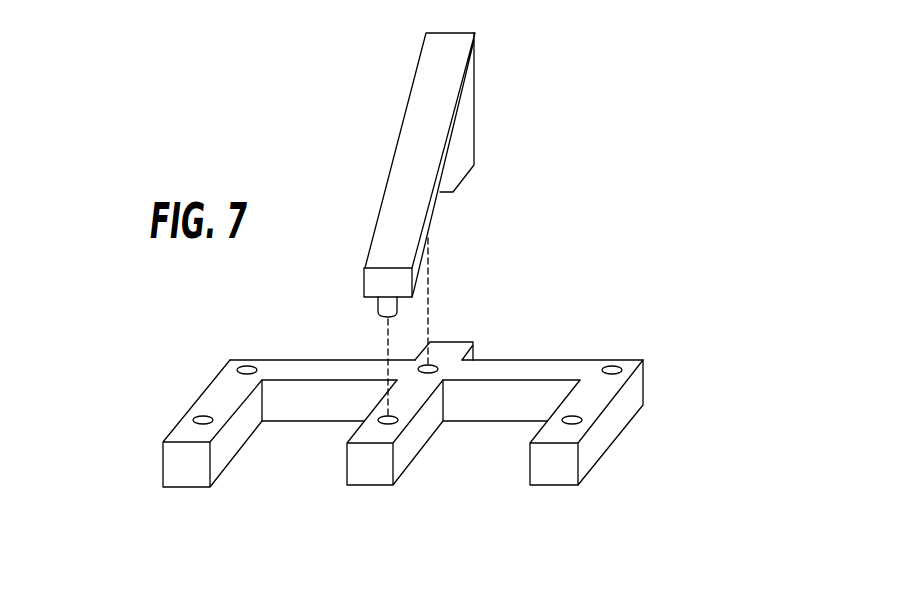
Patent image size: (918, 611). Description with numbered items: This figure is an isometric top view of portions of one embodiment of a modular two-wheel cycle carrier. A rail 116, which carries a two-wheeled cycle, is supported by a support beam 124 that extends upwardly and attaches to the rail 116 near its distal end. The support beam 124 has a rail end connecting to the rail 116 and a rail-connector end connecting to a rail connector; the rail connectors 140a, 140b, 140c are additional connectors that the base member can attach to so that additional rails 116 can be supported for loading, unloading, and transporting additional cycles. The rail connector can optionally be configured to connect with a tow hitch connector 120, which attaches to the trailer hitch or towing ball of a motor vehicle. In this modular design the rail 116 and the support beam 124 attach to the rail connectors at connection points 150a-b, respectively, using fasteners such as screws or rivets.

The rail 116 is at (420, 140).
The support beam 124 is at (463, 123).
The tow hitch connector 120 is at (475, 343).
The rail connector 140a is at (222, 400).
The rail connector 140b is at (585, 398).
The third leg 140c is at (375, 428).
The connection points 150a-b is at (400, 420).